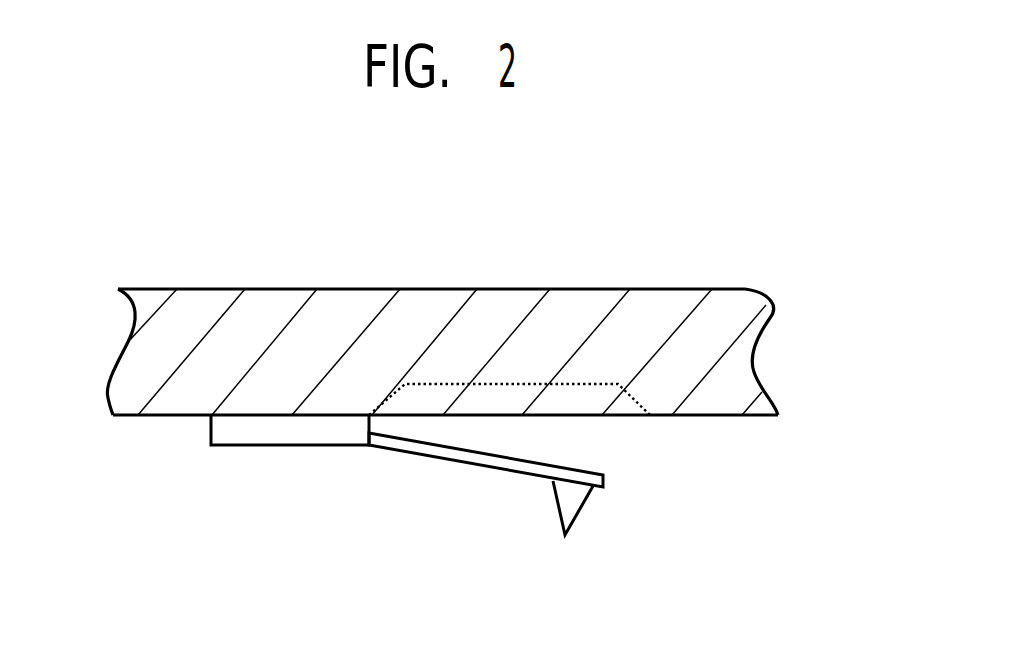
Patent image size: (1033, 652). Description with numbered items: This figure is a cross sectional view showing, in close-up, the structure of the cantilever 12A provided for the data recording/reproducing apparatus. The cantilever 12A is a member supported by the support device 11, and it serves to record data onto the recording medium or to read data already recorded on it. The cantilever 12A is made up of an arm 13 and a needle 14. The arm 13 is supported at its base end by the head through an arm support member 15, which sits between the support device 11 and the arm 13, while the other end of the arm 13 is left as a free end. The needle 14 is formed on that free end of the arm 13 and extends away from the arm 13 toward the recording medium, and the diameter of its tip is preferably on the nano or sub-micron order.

The support device 11 is at (589, 289).
The cantilever 12A is at (608, 495).
The arm 13 is at (477, 467).
The needle 14 is at (577, 517).
The arm support member 15 is at (211, 445).